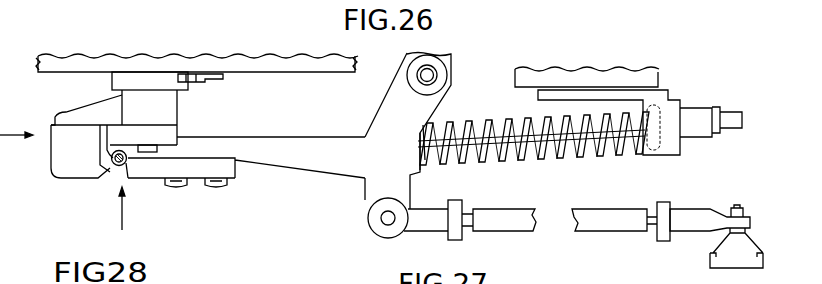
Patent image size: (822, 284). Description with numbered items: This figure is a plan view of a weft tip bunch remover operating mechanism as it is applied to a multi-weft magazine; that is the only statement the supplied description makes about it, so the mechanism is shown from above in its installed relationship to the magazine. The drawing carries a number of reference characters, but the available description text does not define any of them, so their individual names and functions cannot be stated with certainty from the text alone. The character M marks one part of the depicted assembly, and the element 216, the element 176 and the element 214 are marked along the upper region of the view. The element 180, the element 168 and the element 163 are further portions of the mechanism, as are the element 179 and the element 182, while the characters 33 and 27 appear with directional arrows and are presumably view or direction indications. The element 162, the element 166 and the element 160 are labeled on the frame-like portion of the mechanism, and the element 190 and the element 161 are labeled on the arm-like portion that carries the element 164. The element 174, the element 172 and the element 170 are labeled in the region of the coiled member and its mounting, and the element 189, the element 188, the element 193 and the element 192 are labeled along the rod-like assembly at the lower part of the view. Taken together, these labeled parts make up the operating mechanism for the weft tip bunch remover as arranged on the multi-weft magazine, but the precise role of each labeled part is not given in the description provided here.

The machine frame member M is at (112, 25).
The mounting block 216 is at (152, 80).
The plate 176 is at (190, 69).
The plate 214 is at (203, 73).
The wedge member 180 is at (72, 117).
The arm 168 is at (260, 118).
The direction arrow 33 is at (16, 147).
The housing body 163 is at (65, 152).
The pivot pin 179 is at (110, 170).
The tab 182 is at (148, 152).
The section arrow 27 is at (111, 208).
The feet 162 is at (229, 172).
The frame member 166 is at (283, 157).
The frame 160 is at (295, 212).
The bracket 190 is at (380, 170).
The arm 161 is at (394, 113).
The pulley 164 is at (434, 73).
The spring seat 174 is at (425, 135).
The bracket 172 is at (671, 110).
The spring 170 is at (512, 203).
The pulley 189 is at (387, 220).
The rod 188 is at (578, 218).
The stud 193 is at (741, 208).
The bracket 192 is at (728, 257).